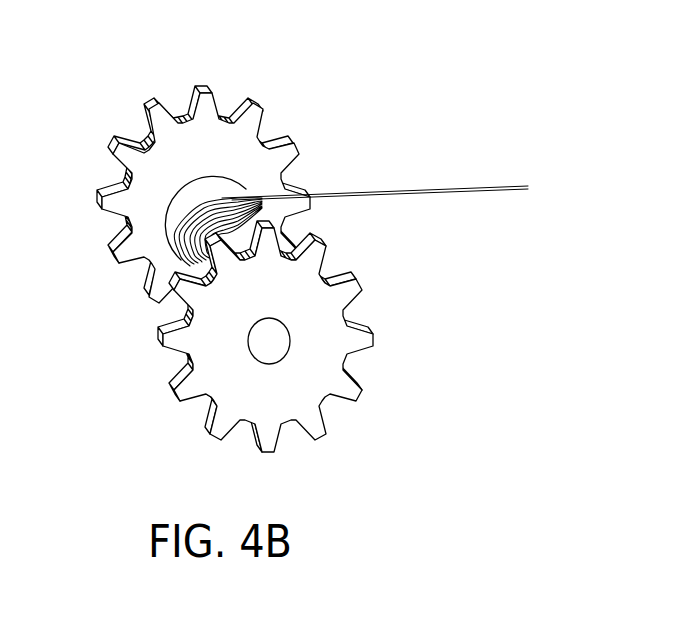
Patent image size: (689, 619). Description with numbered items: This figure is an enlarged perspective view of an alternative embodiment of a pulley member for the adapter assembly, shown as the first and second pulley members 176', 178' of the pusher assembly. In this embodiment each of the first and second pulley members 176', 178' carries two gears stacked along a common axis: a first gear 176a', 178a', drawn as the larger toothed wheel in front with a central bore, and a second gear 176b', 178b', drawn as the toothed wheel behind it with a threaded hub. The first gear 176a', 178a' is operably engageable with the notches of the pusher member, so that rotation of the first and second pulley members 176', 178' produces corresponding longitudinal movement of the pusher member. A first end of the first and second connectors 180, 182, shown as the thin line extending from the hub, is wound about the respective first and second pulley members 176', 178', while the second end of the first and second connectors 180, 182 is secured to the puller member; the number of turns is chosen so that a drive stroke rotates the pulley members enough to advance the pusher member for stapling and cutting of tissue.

The first pulley member 176' is at (285, 264).
The second pulley member 178' is at (285, 264).
The first gear 176a' is at (280, 359).
The first gear 178a' is at (280, 359).
The second gear 176b' is at (227, 172).
The second gear 178b' is at (227, 172).
The first connector 180 is at (375, 152).
The second connector 182 is at (422, 188).